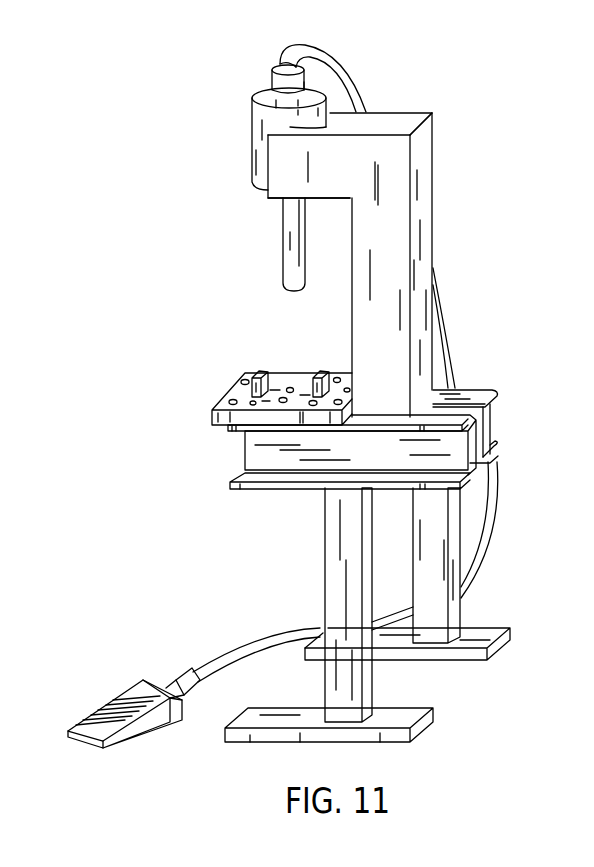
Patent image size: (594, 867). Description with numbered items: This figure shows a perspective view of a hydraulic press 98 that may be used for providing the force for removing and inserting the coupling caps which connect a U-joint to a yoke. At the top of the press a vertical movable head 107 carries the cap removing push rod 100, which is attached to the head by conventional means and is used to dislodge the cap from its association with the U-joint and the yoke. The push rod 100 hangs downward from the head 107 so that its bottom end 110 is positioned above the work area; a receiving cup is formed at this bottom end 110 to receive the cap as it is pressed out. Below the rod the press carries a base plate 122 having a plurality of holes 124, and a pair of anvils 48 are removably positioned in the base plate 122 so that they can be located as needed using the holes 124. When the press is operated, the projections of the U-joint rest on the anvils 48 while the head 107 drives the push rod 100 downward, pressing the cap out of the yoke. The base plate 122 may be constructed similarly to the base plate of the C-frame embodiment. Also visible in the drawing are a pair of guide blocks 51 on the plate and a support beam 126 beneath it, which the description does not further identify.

The hydraulic press 98 is at (462, 263).
The vertical movable head 107 is at (252, 120).
The cap removing push rod 100 is at (283, 225).
The bottom end 110 is at (283, 268).
The holes 124 is at (240, 388).
The anvils 48 is at (247, 383).
The guide block 51 is at (257, 376).
The base plate 122 is at (237, 428).
The support beam 126 is at (303, 479).